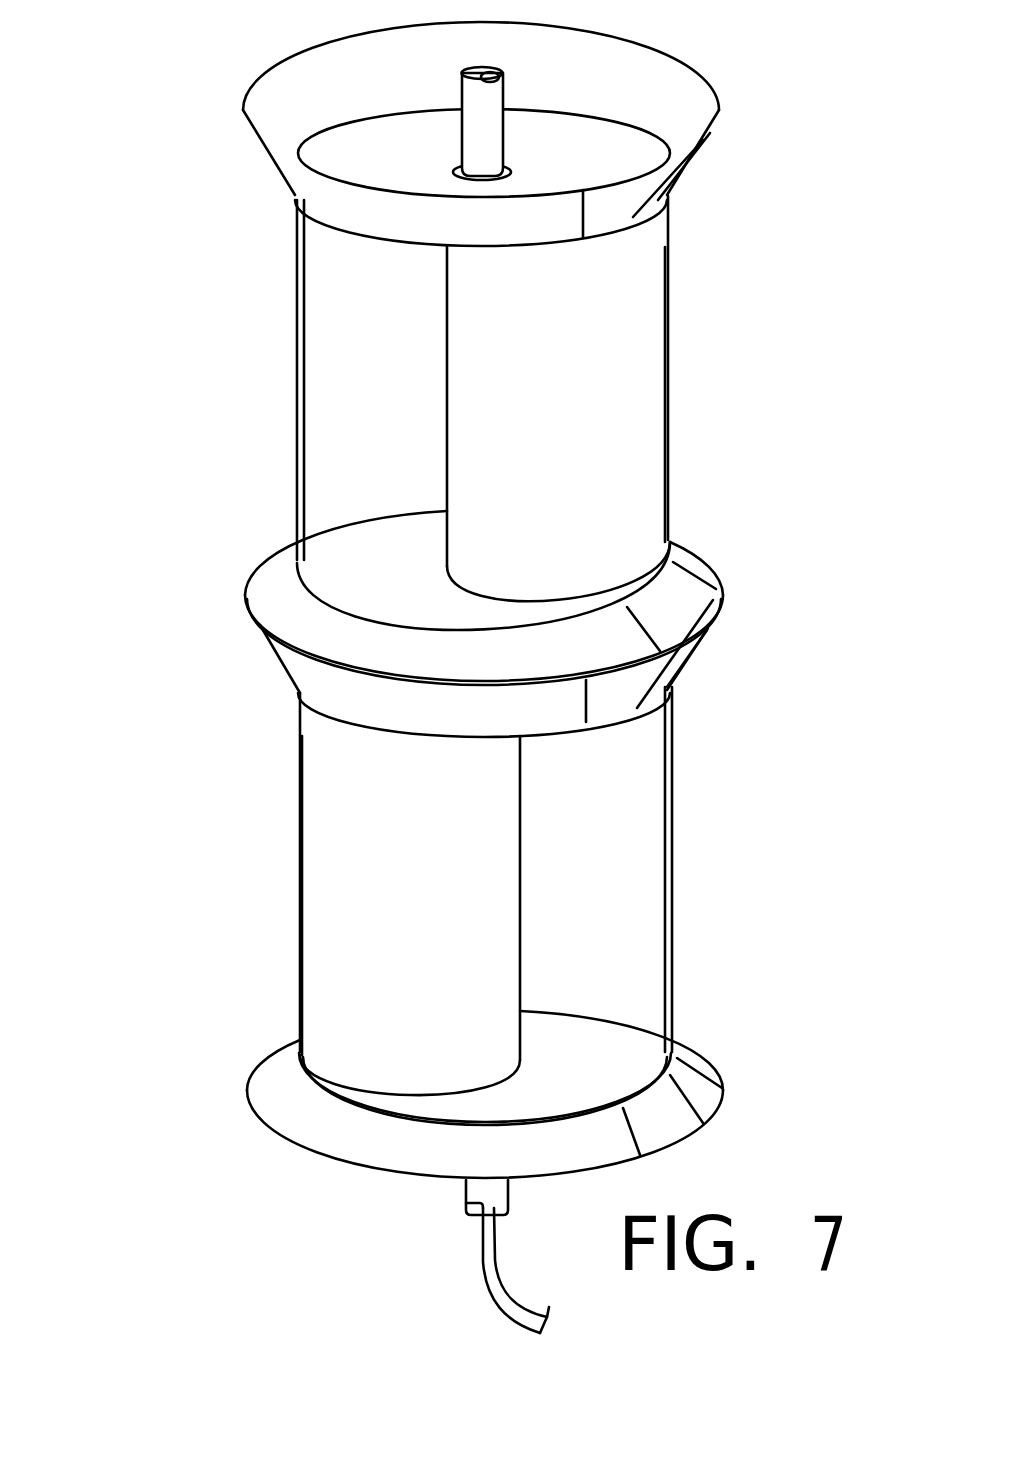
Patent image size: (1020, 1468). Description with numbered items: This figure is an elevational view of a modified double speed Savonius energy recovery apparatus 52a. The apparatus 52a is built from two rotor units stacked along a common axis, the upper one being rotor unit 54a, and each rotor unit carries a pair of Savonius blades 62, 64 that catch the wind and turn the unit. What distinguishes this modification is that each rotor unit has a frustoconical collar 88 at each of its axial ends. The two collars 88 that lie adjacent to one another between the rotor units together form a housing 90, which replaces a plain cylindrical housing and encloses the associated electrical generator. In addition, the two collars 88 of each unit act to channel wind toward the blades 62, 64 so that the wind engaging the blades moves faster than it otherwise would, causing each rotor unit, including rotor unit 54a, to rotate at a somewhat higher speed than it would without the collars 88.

The modified apparatus 52a is at (160, 188).
The rotor unit 54a is at (713, 312).
The blade 62 is at (341, 311).
The blade 64 is at (590, 438).
The frustoconical collar 88 is at (660, 183).
The housing 90 is at (313, 677).